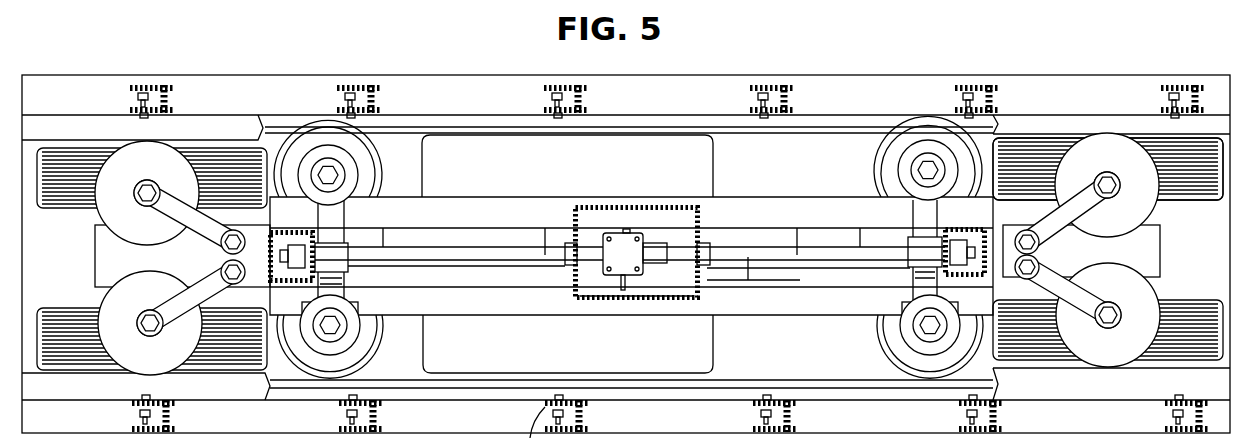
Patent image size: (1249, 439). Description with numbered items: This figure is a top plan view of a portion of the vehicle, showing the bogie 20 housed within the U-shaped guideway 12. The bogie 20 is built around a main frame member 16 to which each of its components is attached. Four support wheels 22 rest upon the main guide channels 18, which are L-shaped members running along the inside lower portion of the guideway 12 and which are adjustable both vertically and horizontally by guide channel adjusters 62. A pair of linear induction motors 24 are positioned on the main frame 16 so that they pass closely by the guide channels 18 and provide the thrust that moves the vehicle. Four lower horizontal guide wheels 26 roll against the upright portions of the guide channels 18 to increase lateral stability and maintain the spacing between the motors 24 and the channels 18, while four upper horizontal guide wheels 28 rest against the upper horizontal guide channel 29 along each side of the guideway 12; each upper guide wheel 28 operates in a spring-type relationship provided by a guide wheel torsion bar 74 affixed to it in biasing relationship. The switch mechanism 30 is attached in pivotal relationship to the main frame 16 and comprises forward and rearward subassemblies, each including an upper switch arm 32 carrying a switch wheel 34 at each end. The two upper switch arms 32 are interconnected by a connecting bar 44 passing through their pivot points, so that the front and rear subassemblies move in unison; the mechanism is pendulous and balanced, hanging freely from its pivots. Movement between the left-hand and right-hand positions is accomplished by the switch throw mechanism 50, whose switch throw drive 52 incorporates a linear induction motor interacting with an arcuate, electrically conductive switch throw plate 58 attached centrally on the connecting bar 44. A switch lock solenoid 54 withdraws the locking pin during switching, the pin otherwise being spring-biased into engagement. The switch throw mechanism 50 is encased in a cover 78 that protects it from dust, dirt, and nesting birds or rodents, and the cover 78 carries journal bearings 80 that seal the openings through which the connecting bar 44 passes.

The guideway 12 is at (852, 60).
The main frame member 16 is at (520, 205).
The guide channels 18 is at (410, 128).
The bogie portion 20 is at (1040, 140).
The support wheels 22 is at (63, 160).
The linear induction motors 24 is at (569, 171).
The lower horizontal guide wheels 26 is at (362, 170).
The upper horizontal guide wheels 28 is at (135, 176).
The upper horizontal guide channel 29 is at (101, 124).
The switch mechanism 30 is at (400, 219).
The upper switch arm 32 is at (333, 223).
The switch wheels 34 is at (318, 152).
The connecting bar 44 is at (470, 250).
The switch throw mechanism 50 is at (646, 200).
The switch throw drive 52 is at (602, 268).
The switch lock solenoid 54 is at (652, 270).
The switch throw plate 58 is at (625, 292).
The guide channel adjusters 62 is at (135, 418).
The guide wheel torsion bar 74 is at (627, 254).
The cover 78 is at (601, 300).
The journal bearings 80 is at (565, 262).